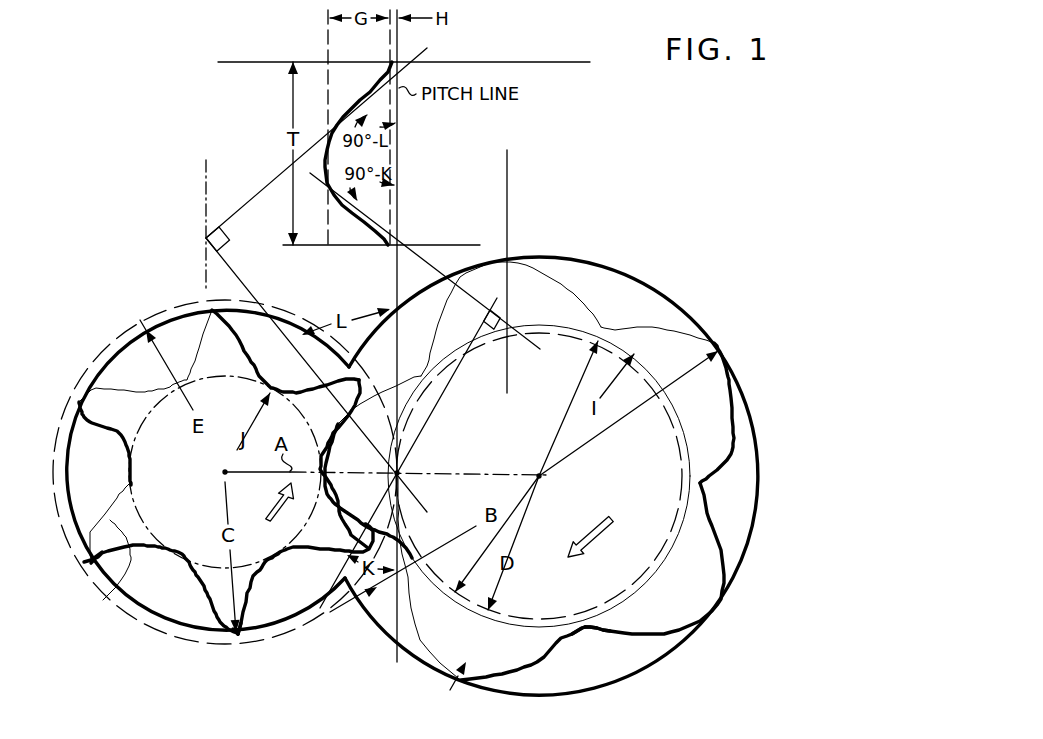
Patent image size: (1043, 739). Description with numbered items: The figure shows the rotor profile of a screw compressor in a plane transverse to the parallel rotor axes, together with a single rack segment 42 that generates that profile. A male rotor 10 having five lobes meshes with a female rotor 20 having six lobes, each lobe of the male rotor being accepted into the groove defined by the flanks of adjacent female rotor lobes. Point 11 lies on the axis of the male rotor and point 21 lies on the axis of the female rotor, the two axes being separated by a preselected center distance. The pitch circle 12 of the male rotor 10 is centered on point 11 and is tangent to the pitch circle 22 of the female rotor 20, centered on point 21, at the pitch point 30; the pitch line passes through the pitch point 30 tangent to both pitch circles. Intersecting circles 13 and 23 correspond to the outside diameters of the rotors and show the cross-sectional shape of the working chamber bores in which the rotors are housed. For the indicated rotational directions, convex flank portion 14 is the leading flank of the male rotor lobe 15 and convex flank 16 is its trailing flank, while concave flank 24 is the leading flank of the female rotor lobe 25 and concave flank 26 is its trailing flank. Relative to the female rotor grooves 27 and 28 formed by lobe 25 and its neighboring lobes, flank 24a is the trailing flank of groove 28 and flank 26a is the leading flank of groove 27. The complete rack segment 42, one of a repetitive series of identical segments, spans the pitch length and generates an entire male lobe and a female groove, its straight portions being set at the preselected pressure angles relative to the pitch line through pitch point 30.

The male rotor 10 is at (668, 609).
The point on axis of male rotor 11 is at (541, 478).
The pitch circle of male rotor 12 is at (580, 634).
The intersecting circle 13 is at (651, 667).
The convex flank portion 14 is at (420, 652).
The male rotor lobe 15 is at (455, 688).
The convex flank 16 is at (534, 667).
The female rotor 20 is at (175, 457).
The point on axis of female rotor 21 is at (222, 473).
The pitch circle of female rotor 22 is at (286, 642).
The intersecting circle 23 is at (242, 637).
The concave flank 24 is at (113, 551).
The flank 24a is at (106, 596).
The female rotor lobe 25 is at (88, 564).
The concave flank 26 is at (134, 504).
The flank 26a is at (89, 540).
The female rotor groove 27 is at (81, 485).
The female rotor groove 28 is at (146, 597).
The pitch point 30 is at (400, 472).
The complete rack segment 42 is at (362, 222).